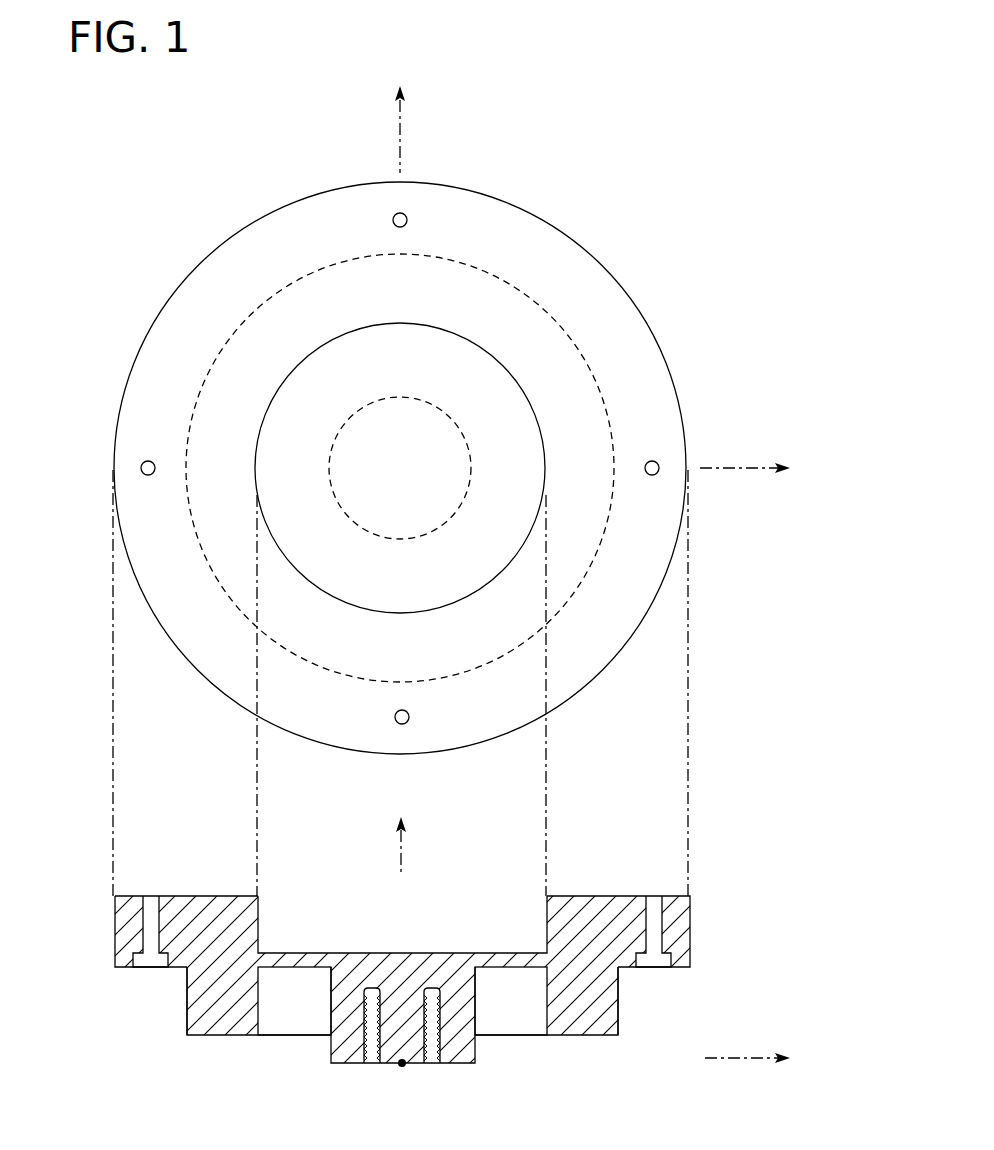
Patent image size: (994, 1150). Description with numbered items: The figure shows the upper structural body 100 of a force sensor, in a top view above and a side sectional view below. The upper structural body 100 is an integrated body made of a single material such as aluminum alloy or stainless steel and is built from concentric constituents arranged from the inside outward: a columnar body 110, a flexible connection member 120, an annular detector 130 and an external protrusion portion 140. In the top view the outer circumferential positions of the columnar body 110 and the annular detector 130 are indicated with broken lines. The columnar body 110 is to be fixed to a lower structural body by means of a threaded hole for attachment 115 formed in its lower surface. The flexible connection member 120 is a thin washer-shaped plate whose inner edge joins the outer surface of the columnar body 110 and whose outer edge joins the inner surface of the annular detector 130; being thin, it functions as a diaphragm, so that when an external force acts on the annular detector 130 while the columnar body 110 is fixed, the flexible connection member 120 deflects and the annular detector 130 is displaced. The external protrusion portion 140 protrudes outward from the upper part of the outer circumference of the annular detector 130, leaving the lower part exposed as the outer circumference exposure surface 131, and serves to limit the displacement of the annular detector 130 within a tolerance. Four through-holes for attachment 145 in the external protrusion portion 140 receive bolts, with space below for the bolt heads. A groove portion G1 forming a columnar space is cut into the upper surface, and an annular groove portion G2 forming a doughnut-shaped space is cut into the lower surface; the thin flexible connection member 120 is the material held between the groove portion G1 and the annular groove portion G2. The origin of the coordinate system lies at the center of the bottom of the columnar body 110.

The upper structural body 100 is at (121, 113).
The columnar body 110 is at (420, 430).
The threaded hole for attachment 115 is at (435, 1053).
The flexible connection member 120 is at (480, 410).
The annular detector 130 is at (551, 394).
The outer circumference exposure surface 131 is at (176, 1010).
The external protrusion portion 140 is at (631, 370).
The through-hole for attachment 145 is at (141, 464).
The groove portion G1 is at (357, 366).
The annular groove portion G2 is at (449, 565).